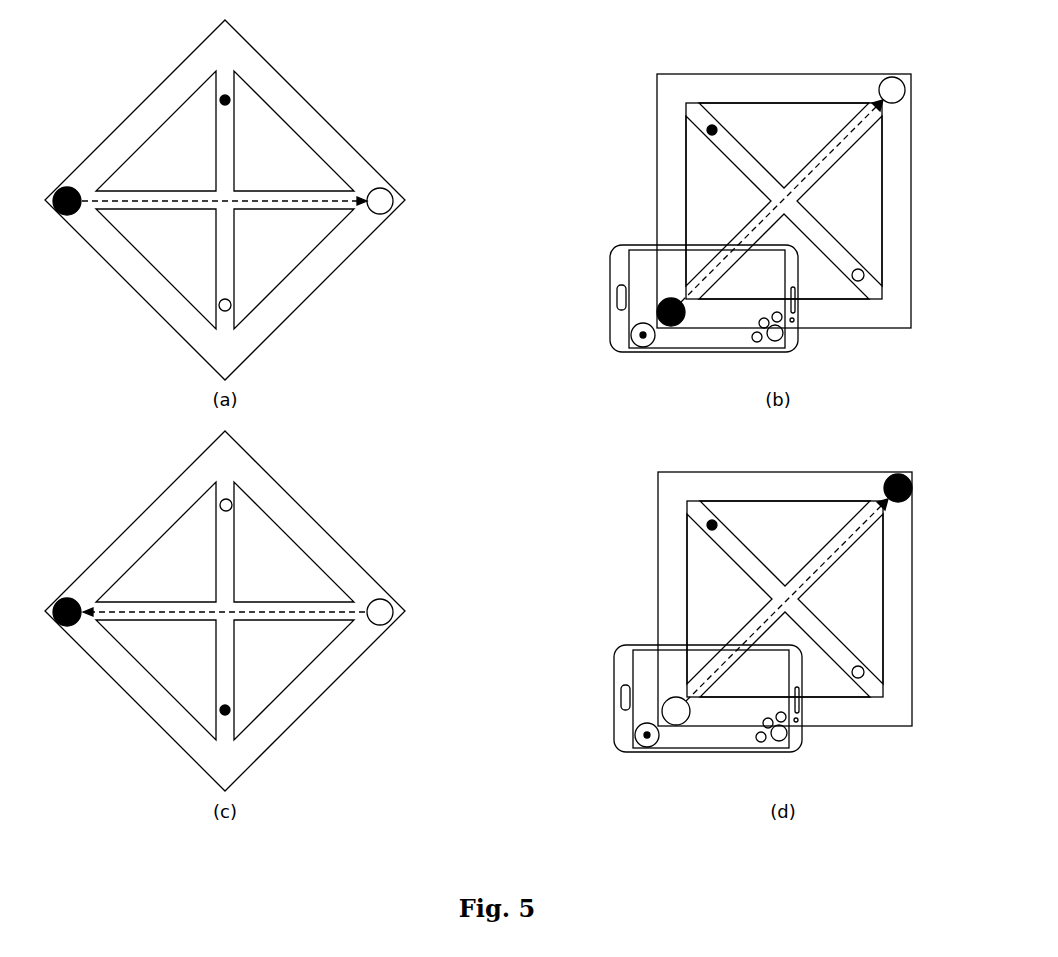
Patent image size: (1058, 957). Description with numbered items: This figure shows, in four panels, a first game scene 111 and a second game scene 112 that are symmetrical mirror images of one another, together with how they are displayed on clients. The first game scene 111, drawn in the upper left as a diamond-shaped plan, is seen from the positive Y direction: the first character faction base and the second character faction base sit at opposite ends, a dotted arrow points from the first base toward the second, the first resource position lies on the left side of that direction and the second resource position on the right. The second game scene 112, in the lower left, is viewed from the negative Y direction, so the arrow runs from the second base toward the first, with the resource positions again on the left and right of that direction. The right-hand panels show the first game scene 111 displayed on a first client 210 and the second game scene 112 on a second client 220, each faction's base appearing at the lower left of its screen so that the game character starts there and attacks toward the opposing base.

The first game scene 111 is at (312, 295).
The second game scene 112 is at (313, 513).
The first client 210 is at (612, 245).
The second client 220 is at (618, 642).